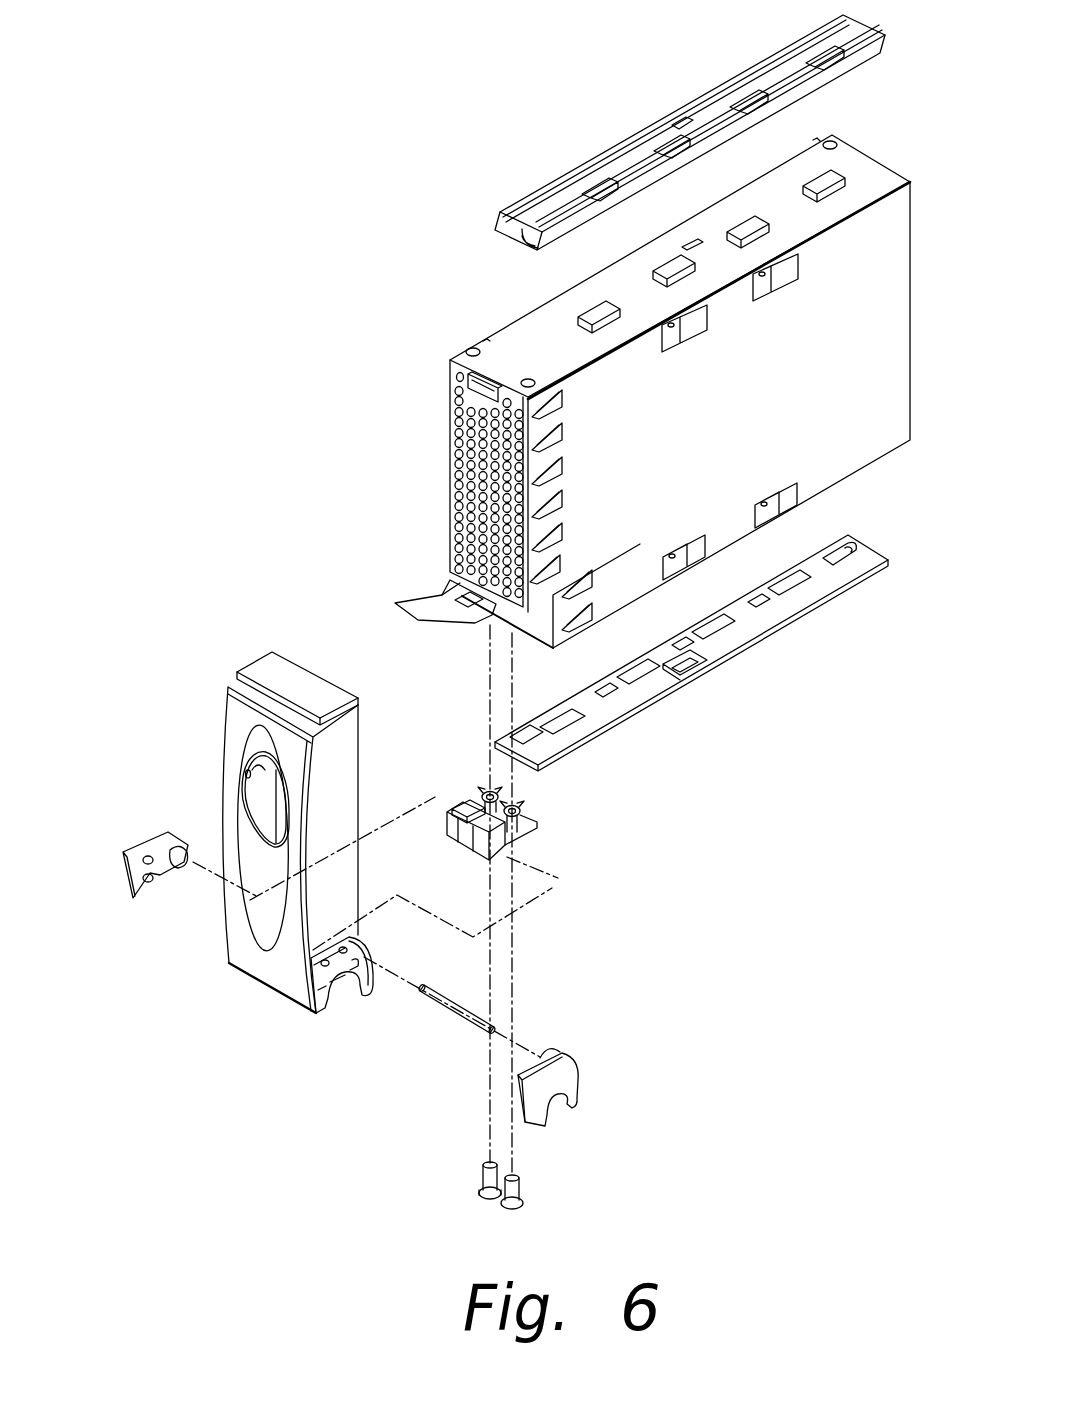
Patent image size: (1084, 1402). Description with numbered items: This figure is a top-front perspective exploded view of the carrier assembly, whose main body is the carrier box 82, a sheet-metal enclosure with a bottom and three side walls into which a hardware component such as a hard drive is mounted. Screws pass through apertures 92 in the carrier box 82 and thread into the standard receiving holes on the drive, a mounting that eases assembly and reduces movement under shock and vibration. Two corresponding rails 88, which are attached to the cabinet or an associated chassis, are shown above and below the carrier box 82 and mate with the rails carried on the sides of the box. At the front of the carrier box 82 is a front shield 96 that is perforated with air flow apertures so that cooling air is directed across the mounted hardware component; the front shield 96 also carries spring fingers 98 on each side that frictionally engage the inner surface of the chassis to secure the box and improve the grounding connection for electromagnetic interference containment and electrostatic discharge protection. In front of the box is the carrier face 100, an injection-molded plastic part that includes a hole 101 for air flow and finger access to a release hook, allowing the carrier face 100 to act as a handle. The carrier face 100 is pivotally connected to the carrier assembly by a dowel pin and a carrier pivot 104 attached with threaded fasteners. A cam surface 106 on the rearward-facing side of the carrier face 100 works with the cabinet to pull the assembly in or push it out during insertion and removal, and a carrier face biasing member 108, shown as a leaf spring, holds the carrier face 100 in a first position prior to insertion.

The carrier box 82 is at (852, 380).
The corresponding rails 88 is at (722, 108).
The apertures 92 is at (765, 500).
The front shield 96 is at (452, 473).
The spring fingers 98 is at (560, 467).
The carrier face 100 is at (265, 966).
The hole 101 is at (242, 806).
The carrier pivot 104 is at (470, 840).
The cam surface 106 is at (366, 984).
The carrier face biasing member 108 is at (432, 608).